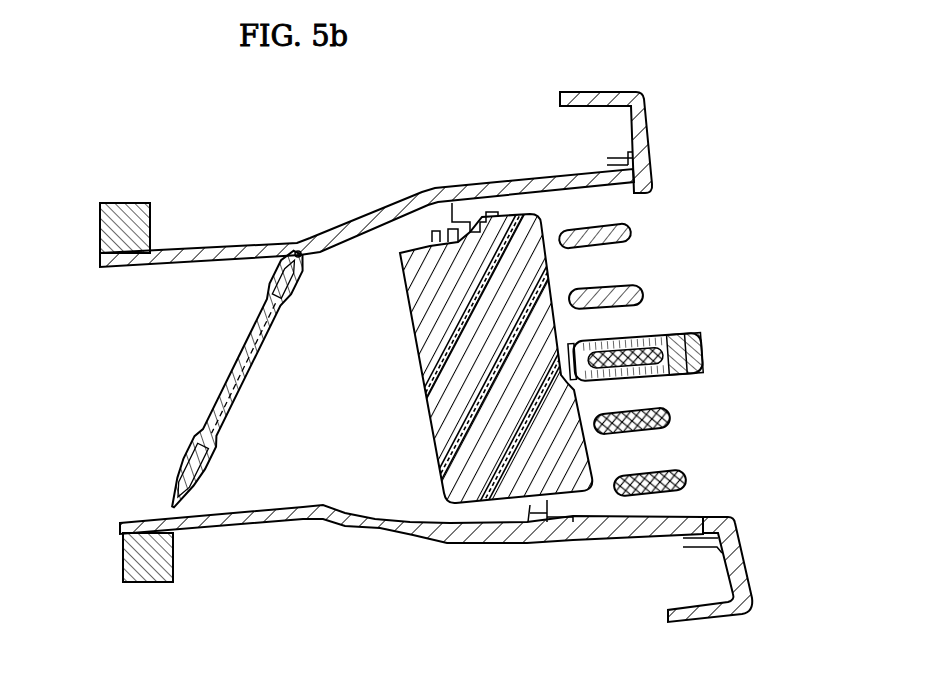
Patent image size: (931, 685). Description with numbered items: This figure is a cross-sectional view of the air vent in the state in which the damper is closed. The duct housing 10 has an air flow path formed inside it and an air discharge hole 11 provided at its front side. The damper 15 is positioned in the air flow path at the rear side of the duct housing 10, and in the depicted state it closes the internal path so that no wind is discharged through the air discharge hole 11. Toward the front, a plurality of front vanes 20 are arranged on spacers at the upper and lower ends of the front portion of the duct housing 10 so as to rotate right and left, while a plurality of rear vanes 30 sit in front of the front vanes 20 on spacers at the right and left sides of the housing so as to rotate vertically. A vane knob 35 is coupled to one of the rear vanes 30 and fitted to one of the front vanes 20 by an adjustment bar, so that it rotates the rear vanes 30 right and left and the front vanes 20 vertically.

The duct housing 10 is at (367, 223).
The air discharge hole 11 is at (642, 450).
The damper 15 is at (257, 332).
The front vanes 20 is at (433, 257).
The rear vanes 30 is at (645, 288).
The vane knob 35 is at (685, 335).